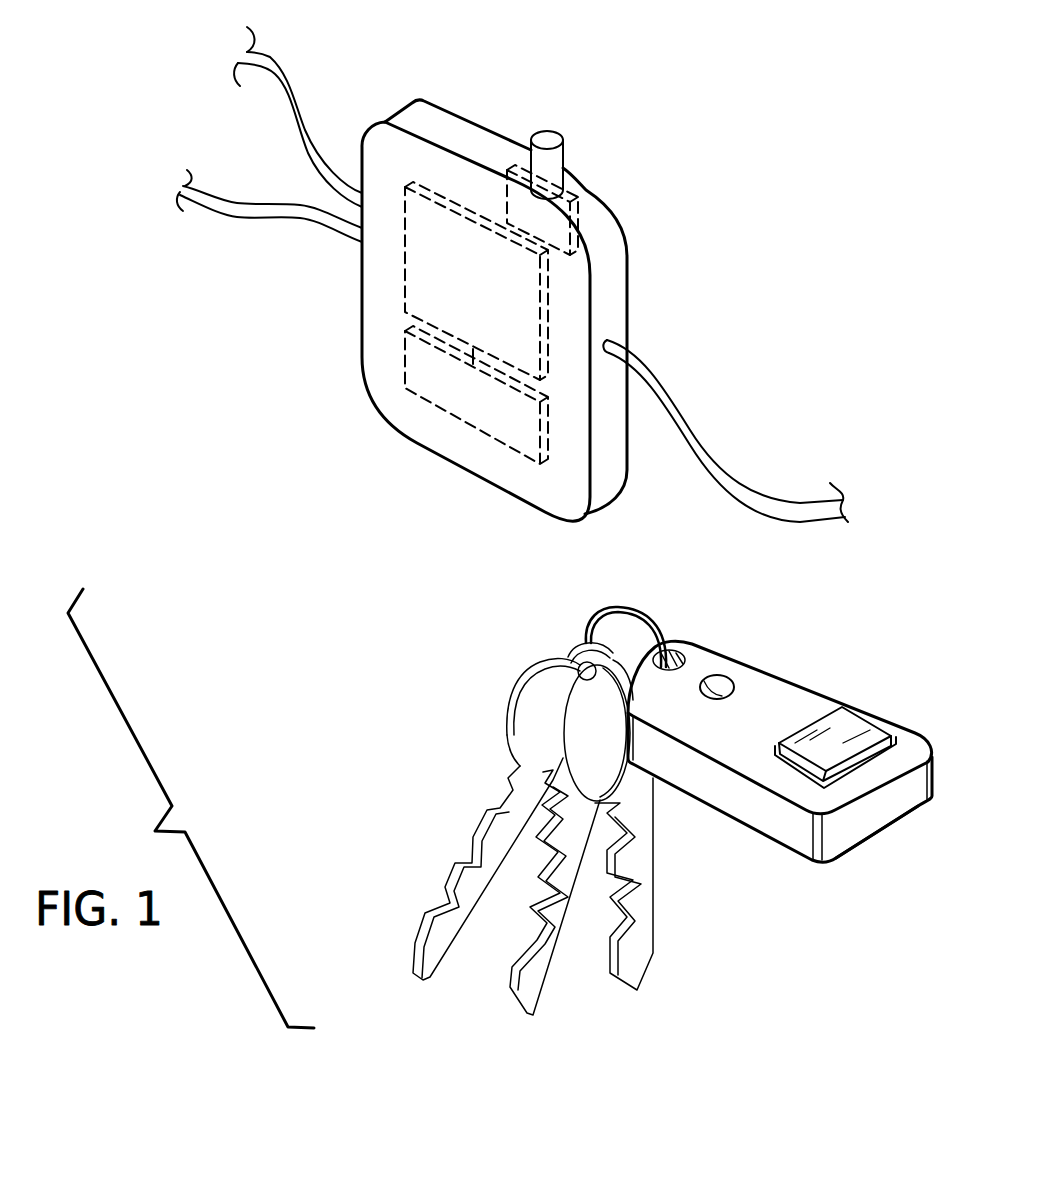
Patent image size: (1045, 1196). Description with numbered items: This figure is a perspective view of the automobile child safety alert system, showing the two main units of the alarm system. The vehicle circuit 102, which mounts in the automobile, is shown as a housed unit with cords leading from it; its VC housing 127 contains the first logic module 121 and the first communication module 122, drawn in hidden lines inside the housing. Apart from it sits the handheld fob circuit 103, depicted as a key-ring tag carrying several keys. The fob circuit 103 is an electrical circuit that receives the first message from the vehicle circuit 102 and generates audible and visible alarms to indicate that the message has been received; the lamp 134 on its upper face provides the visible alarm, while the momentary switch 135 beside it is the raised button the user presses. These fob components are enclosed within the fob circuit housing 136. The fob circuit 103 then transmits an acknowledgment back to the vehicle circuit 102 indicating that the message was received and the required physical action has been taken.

The vehicle circuit 102 is at (603, 195).
The first logic module 121 is at (447, 398).
The first communication module 122 is at (547, 231).
The VC housing 127 is at (527, 307).
The fob circuit 103 is at (797, 655).
The lamp 134 is at (713, 677).
The momentary switch 135 is at (840, 733).
The fob circuit housing 136 is at (878, 817).